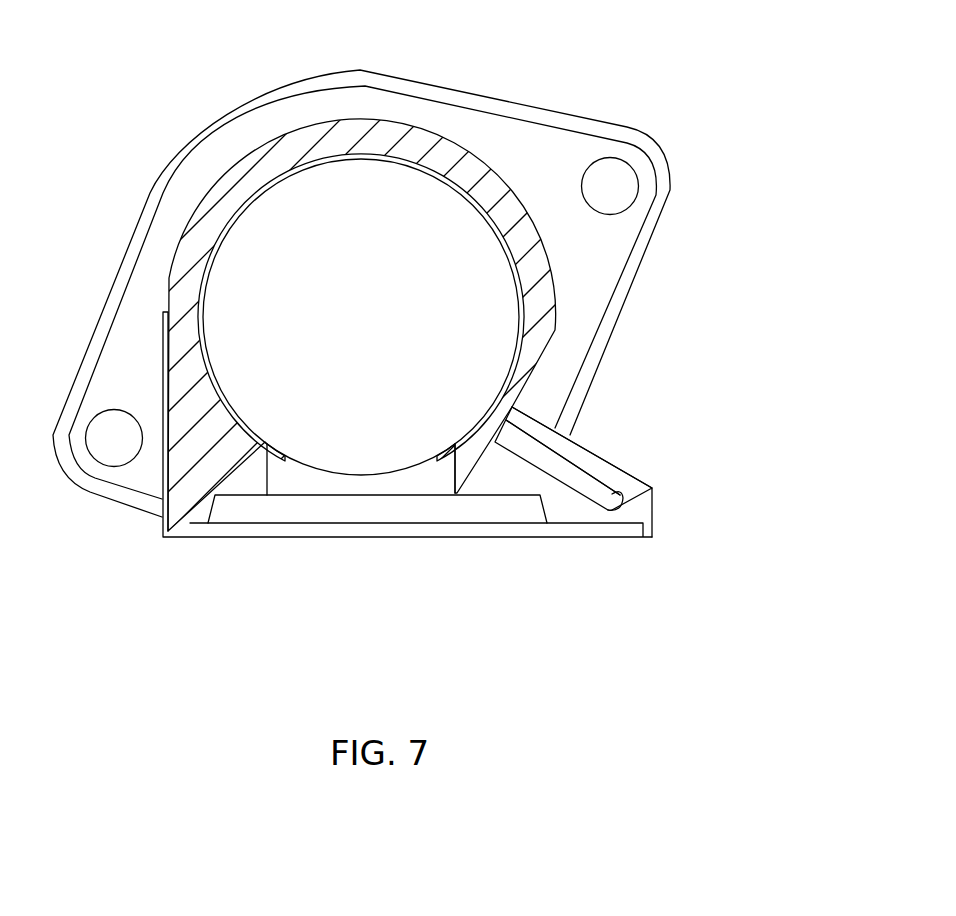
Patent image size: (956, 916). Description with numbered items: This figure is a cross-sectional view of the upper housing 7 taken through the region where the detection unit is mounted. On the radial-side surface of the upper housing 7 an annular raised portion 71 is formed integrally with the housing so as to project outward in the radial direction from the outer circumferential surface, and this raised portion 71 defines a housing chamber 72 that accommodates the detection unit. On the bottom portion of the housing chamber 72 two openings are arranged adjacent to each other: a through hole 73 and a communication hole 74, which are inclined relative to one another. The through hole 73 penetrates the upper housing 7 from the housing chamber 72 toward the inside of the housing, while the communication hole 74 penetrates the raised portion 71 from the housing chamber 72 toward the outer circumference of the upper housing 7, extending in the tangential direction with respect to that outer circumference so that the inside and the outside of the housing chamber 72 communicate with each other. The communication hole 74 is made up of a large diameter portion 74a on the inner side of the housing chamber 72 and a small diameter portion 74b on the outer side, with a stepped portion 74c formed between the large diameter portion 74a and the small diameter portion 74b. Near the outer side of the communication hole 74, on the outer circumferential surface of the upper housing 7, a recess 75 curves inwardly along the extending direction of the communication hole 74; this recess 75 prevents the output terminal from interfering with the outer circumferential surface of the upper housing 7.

The upper housing 7 is at (643, 114).
The raised portion 71 is at (162, 528).
The housing chamber 72 is at (283, 508).
The through hole 73 is at (328, 480).
The communication hole 74 is at (598, 506).
The large diameter portion 74a is at (583, 482).
The small diameter portion 74b is at (580, 458).
The stepped portion 74c is at (608, 509).
The recess 75 is at (533, 385).